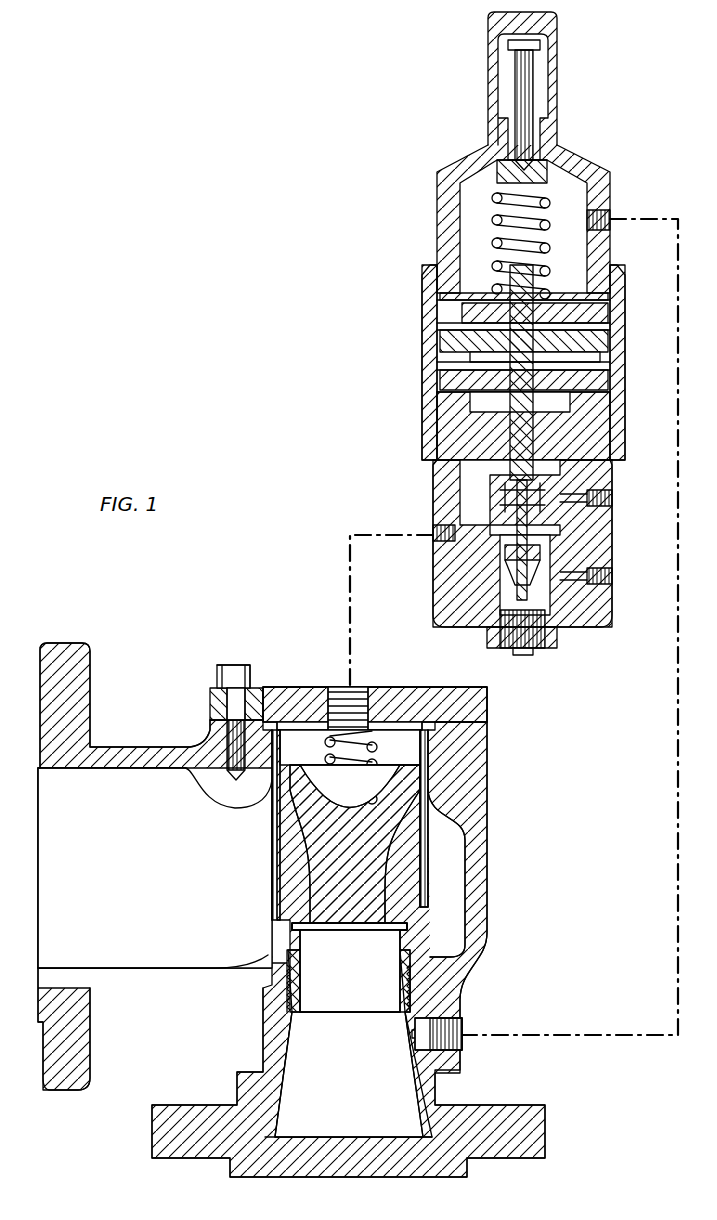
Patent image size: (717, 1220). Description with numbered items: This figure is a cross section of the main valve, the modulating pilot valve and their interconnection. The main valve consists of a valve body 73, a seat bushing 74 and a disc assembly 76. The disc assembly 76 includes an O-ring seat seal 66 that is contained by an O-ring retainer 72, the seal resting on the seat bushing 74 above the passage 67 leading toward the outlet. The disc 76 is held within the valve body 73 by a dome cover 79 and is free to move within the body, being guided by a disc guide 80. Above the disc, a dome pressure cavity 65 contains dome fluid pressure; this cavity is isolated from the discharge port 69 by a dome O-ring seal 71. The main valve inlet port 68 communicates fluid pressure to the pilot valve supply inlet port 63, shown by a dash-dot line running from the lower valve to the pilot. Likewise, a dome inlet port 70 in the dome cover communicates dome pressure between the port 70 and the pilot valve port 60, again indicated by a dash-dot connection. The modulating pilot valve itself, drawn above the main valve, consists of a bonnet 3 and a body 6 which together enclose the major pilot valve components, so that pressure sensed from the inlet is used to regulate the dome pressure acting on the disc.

The bonnet 3 is at (520, 333).
The body 6 is at (421, 282).
The pilot valve port 60 is at (432, 528).
The pilot valve supply inlet port 63 is at (612, 218).
The dome pressure cavity 65 is at (408, 760).
The O-ring seat seal 66 is at (410, 935).
The inlet passage 67 is at (348, 971).
The main valve inlet port 68 is at (462, 1034).
The discharge port 69 is at (166, 880).
The dome inlet port 70 is at (340, 687).
The dome O-ring seal 71 is at (282, 778).
The O-ring retainer 72 is at (345, 932).
The valve body 73 is at (291, 910).
The seat bushing 74 is at (396, 1018).
The disc assembly 76 is at (392, 832).
The dome cover 79 is at (486, 708).
The disc guide 80 is at (272, 850).